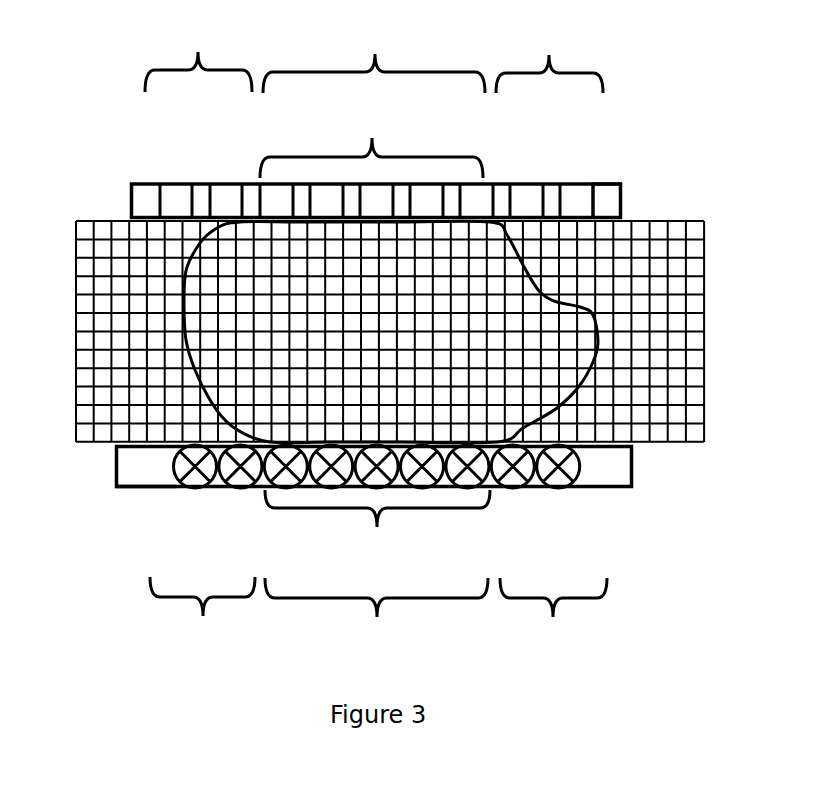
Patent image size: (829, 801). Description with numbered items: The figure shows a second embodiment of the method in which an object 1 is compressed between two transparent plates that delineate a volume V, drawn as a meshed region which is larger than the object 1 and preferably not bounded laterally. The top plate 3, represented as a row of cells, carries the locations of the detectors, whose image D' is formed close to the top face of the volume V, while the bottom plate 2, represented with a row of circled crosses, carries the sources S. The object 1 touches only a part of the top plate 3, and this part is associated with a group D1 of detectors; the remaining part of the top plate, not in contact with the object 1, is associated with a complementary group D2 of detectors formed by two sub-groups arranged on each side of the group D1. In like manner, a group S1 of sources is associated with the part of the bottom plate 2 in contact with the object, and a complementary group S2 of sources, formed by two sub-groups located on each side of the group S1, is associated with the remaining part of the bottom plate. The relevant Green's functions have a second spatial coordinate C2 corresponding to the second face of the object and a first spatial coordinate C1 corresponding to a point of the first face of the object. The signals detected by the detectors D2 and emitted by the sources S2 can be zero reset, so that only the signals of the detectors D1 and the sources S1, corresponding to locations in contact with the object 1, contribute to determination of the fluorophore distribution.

The object 1 is at (593, 352).
The lower substrate with electrodes 2 is at (233, 427).
The upper substrate with electrodes 3 is at (492, 226).
The volume V is at (105, 296).
The image from the detectors D' is at (628, 171).
The sources S is at (170, 488).
The group of detectors D1 is at (374, 58).
The complementary group of detectors D2 is at (374, 58).
The first spatial coordinate C1 is at (377, 529).
The second spatial coordinate C2 is at (371, 142).
The group of sources S1 is at (376, 618).
The complementary group of sources S2 is at (378, 617).